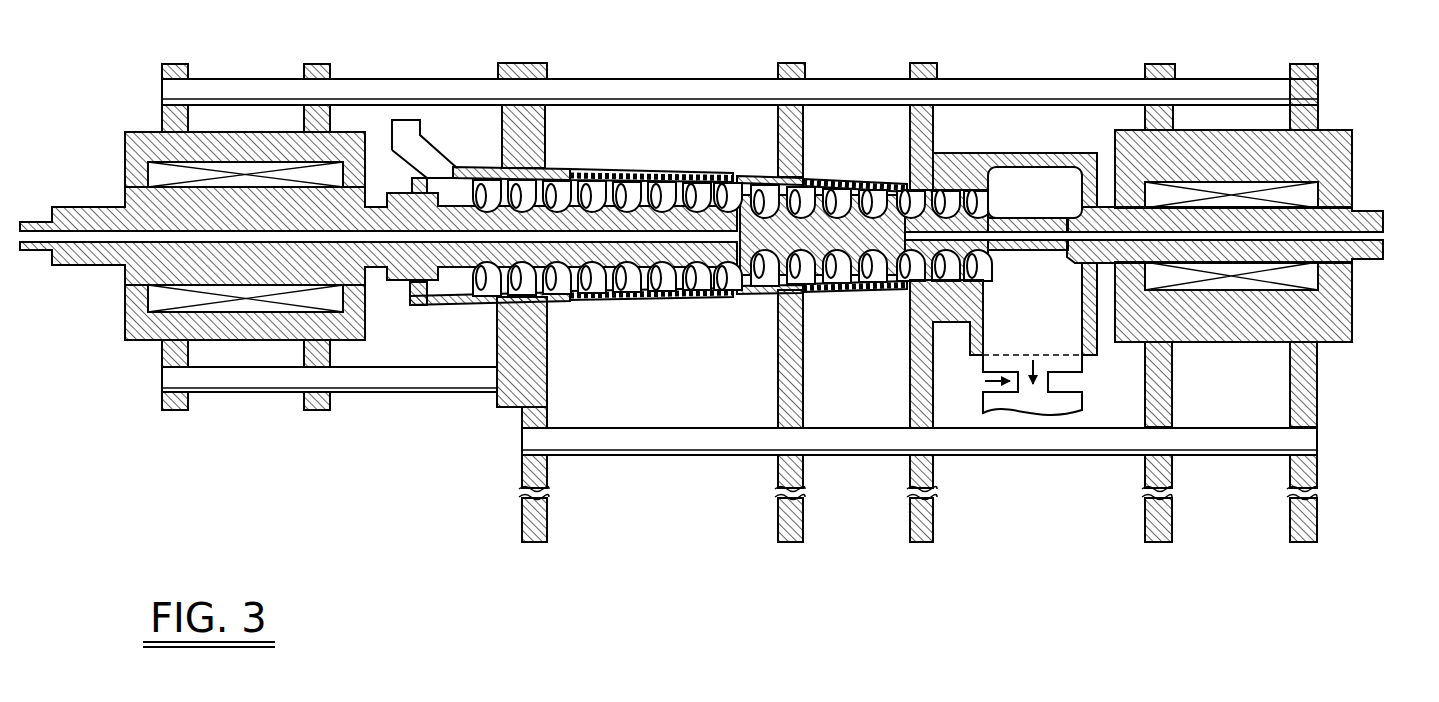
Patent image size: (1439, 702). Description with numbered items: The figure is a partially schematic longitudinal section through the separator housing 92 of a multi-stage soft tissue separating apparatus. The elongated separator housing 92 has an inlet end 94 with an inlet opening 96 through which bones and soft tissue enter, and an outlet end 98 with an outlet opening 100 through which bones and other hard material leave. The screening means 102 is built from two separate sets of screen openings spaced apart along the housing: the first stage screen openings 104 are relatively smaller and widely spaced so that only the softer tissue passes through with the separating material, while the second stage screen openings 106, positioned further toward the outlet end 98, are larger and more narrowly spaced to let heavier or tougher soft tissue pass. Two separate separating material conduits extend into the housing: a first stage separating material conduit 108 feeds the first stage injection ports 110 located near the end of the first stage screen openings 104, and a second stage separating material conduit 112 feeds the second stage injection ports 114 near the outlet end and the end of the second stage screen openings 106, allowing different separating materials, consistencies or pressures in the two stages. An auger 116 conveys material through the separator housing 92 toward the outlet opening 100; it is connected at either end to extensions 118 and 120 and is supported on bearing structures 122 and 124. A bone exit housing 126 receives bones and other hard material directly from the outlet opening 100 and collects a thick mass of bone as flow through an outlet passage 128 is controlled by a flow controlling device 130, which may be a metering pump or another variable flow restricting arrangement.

The separator housing 92 is at (633, 155).
The inlet end 94 is at (470, 155).
The inlet opening 96 is at (408, 130).
The outlet end 98 is at (975, 145).
The outlet opening 100 is at (990, 265).
The screening means 102 is at (660, 304).
The first stage screen openings 104 is at (692, 168).
The second stage screen openings 106 is at (852, 180).
The first stage separating material conduit 108 is at (137, 235).
The first stage injection ports 110 is at (733, 213).
The second stage separating material conduit 112 is at (1327, 233).
The second stage injection ports 114 is at (908, 188).
The auger 116 is at (578, 215).
The extension 118 is at (172, 207).
The extension 120 is at (1353, 260).
The bearing structure 122 is at (182, 150).
The bearing structure 124 is at (1322, 325).
The bone exit housing 126 is at (1055, 157).
The outlet passage 128 is at (1070, 357).
The flow controlling device 130 is at (1037, 402).